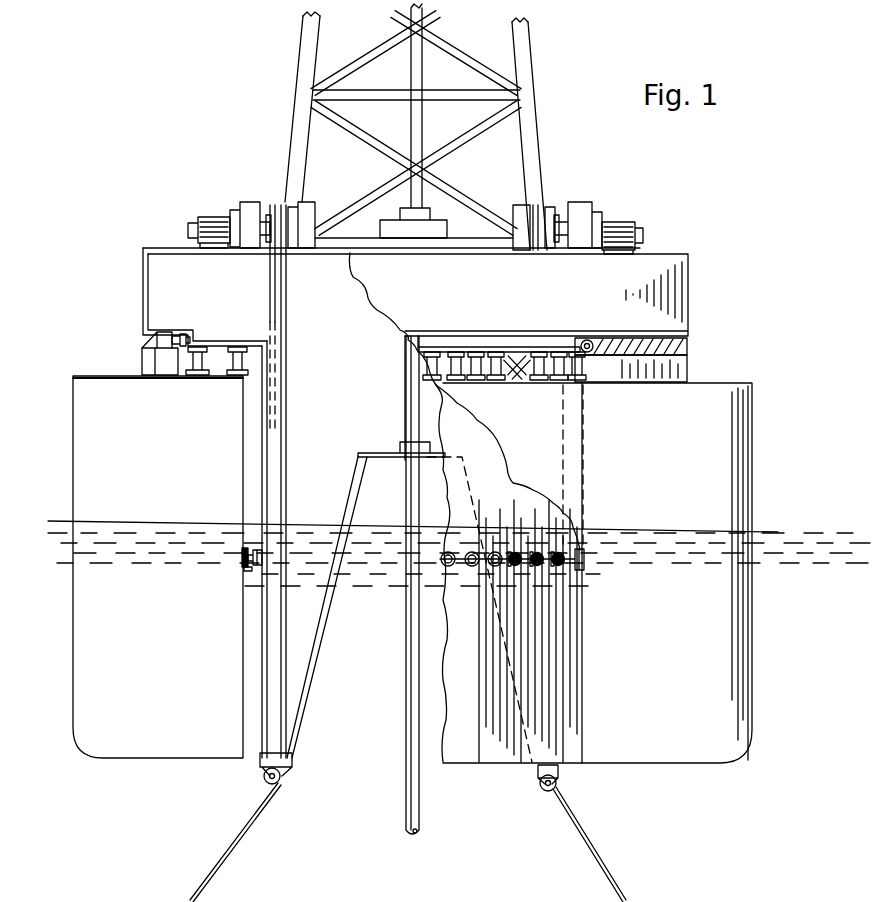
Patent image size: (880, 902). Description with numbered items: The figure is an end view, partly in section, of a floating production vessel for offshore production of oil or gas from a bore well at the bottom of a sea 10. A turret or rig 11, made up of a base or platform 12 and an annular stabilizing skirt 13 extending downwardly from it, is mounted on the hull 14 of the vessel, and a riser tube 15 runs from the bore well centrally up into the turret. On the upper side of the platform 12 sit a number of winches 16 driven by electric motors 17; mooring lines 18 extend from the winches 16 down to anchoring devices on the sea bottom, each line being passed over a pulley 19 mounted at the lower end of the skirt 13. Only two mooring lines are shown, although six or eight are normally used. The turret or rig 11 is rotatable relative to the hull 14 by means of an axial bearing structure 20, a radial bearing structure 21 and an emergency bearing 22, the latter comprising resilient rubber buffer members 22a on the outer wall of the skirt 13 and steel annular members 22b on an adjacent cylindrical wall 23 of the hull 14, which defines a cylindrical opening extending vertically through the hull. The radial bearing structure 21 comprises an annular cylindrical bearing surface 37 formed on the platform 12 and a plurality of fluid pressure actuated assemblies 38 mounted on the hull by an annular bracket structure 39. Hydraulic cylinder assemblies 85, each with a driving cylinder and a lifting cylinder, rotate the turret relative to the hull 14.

The sea 10 is at (758, 532).
The turret or rig 11 is at (527, 80).
The base or platform 12 is at (690, 272).
The annular stabilizing skirt 13 is at (465, 752).
The hull 14 is at (738, 604).
The riser tube 15 is at (405, 780).
The winches 16 is at (258, 205).
The electric motors 17 is at (228, 218).
The mooring lines 18 is at (247, 835).
The pulley 19 is at (282, 772).
The axial bearing structure 20 is at (238, 372).
The radial bearing structure 21 is at (148, 340).
The emergency bearing 22 is at (243, 548).
The resilient buffer members 22a is at (262, 560).
The annular members 22b is at (250, 570).
The cylindrical wall 23 is at (245, 452).
The annular cylindrical bearing surface 37 is at (545, 342).
The fluid pressure actuated assemblies 38 is at (171, 352).
The annular bracket structure 39 is at (143, 358).
The hydraulic cylinder assemblies 85 is at (206, 360).